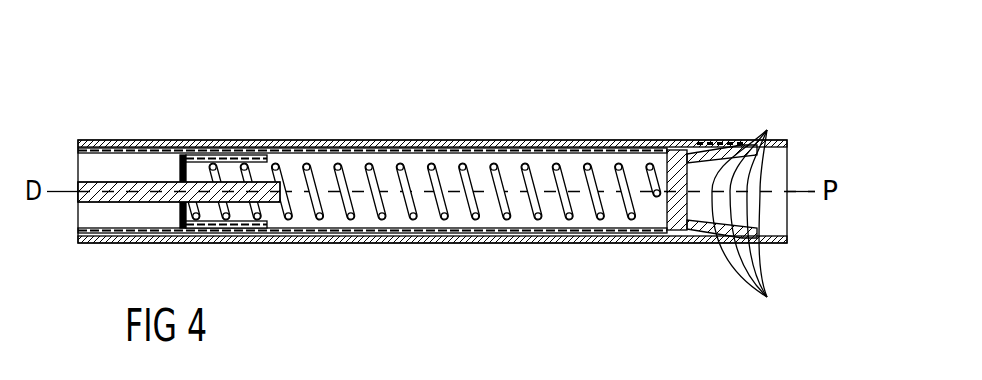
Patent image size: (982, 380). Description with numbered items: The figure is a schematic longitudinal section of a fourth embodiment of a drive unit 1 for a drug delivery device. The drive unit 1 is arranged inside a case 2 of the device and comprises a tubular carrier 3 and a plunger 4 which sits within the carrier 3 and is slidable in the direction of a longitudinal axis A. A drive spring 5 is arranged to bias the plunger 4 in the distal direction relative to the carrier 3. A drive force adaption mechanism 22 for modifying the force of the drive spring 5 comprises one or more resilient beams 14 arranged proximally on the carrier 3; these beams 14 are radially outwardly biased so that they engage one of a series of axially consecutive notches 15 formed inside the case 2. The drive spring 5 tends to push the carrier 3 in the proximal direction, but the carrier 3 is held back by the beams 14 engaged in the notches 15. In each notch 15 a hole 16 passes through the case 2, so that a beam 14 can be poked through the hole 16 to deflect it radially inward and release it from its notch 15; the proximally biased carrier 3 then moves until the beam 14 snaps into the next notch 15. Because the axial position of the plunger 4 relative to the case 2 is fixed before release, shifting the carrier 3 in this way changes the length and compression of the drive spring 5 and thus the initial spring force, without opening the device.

The drive unit 1 is at (330, 126).
The case 2 is at (190, 142).
The tubular carrier 3 is at (287, 149).
The plunger 4 is at (110, 187).
The drive spring 5 is at (399, 165).
The resilient beams 14 is at (695, 156).
The notches 15 is at (746, 200).
The hole 16 is at (763, 232).
The drive force adaption mechanism 22 is at (736, 125).
The longitudinal axis A is at (425, 194).